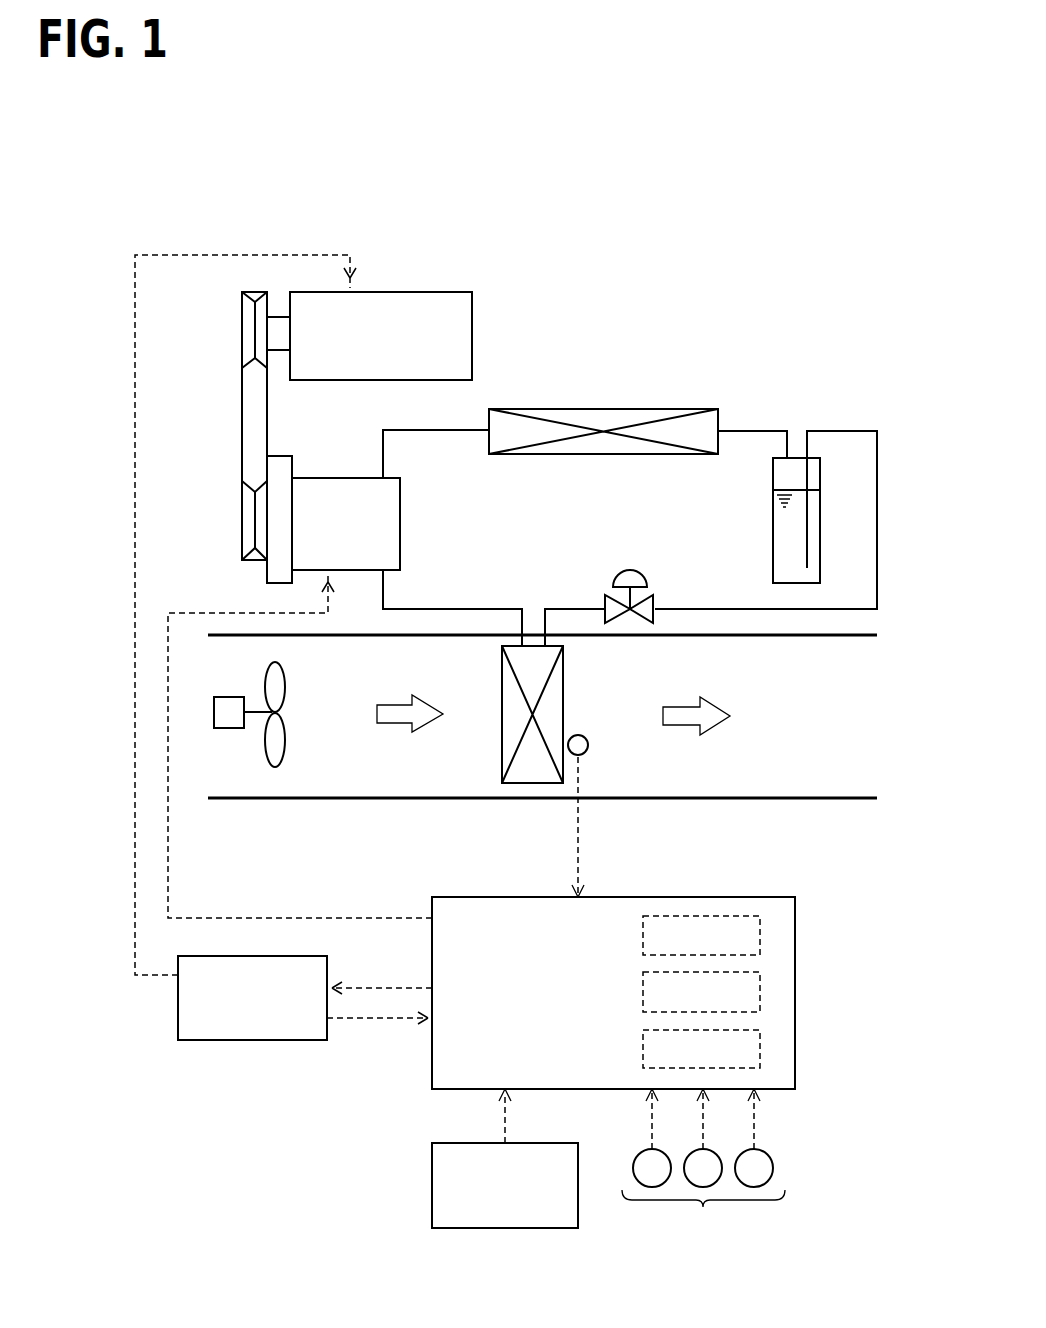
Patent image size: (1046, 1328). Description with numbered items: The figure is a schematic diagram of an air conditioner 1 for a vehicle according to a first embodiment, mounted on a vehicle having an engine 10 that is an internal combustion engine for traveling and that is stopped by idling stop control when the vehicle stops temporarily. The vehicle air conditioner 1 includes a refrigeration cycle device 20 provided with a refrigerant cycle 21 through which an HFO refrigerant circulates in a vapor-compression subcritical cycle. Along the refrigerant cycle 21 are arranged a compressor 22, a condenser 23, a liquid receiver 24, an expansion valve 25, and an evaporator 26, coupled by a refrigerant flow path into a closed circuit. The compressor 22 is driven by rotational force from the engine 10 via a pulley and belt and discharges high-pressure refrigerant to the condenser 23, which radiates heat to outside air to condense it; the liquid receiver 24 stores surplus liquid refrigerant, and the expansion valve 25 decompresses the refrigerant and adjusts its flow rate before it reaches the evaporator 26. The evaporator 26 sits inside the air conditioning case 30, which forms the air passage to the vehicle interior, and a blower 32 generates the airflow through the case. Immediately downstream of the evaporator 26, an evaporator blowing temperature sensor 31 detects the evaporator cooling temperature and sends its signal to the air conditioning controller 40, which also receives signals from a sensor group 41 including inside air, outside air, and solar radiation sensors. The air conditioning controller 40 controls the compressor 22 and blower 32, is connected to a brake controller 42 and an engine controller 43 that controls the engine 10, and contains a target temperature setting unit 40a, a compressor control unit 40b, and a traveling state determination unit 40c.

The air conditioner for a vehicle 1 is at (833, 410).
The engine 10 is at (472, 327).
The refrigeration cycle device 20 is at (681, 395).
The refrigerant cycle 21 is at (383, 440).
The compressor 22 is at (400, 527).
The condenser 23 is at (608, 409).
The liquid receiver 24 is at (773, 480).
The expansion valve 25 is at (655, 607).
The evaporator 26 is at (502, 672).
The air conditioning case 30 is at (345, 800).
The evaporator blowing temperature sensor 31 is at (588, 748).
The blower 32 is at (275, 770).
The air conditioning controller 40 is at (616, 955).
The target temperature setting unit 40a is at (725, 949).
The compressor control unit 40b is at (725, 1006).
The traveling state determination unit 40c is at (725, 1063).
The sensor group 41 is at (703, 1167).
The brake controller 42 is at (432, 1188).
The engine controller 43 is at (250, 1040).